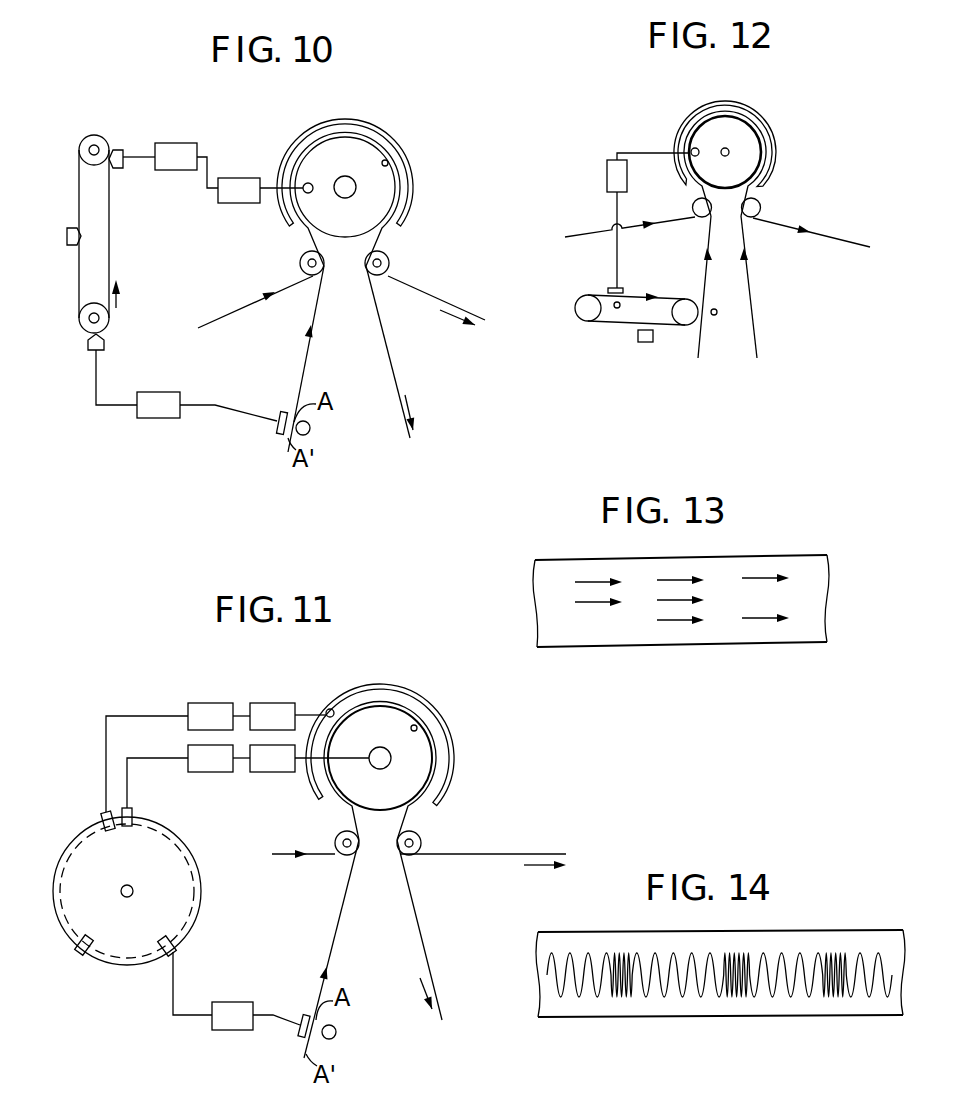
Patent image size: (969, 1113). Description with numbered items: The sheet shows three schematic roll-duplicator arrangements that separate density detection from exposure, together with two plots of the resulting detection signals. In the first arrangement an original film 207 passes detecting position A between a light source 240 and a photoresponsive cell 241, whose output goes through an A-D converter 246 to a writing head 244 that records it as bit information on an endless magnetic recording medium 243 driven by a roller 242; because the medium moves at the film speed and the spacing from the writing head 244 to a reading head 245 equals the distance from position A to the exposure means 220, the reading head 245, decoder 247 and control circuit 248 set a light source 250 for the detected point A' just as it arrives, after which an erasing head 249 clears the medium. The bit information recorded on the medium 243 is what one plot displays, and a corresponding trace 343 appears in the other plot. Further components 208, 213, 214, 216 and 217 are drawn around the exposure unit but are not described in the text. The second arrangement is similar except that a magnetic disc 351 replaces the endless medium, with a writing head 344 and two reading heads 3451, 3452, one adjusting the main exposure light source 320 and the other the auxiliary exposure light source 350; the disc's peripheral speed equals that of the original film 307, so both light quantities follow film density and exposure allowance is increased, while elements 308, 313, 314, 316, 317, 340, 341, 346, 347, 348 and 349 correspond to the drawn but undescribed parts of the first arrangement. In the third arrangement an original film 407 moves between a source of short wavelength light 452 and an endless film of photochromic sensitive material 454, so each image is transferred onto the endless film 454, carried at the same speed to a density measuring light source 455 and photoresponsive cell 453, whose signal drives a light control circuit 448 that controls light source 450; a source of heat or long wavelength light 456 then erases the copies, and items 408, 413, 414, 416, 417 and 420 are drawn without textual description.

In FIG. 10, the original film 207 is at (312, 352).
In FIG. 10, the gas flow 208 is at (268, 298).
In FIG. 10, the nip roller 213 is at (300, 258).
In FIG. 10, the nip roller 214 is at (389, 258).
In FIG. 10, the shield 216 is at (383, 122).
In FIG. 10, the sensor 217 is at (388, 162).
In FIG. 10, the exposure means 220 is at (355, 164).
In FIG. 10, the light source 240 is at (311, 430).
In FIG. 10, the photoresponsive cell 241 is at (276, 431).
In FIG. 10, the roller 242 is at (82, 330).
In FIG. 10, the endless magnetic recording medium 243 is at (110, 222).
In FIG. 13, the endless magnetic recording medium 243 is at (640, 634).
In FIG. 10, the writing head 244 is at (104, 344).
In FIG. 10, the reading head 245 is at (116, 150).
In FIG. 10, the A-D converter 246 is at (161, 392).
In FIG. 10, the decoder 247 is at (173, 143).
In FIG. 10, the control circuit 248 is at (238, 178).
In FIG. 10, the erasing head 249 is at (67, 236).
In FIG. 10, the light source 250 is at (310, 194).
In FIG. 11, the original film 307 is at (335, 928).
In FIG. 11, the gas flow 308 is at (276, 858).
In FIG. 11, the nip roller 313 is at (335, 838).
In FIG. 11, the nip roller 314 is at (420, 838).
In FIG. 11, the shield 316 is at (418, 690).
In FIG. 11, the sensor 317 is at (417, 727).
In FIG. 11, the main exposure light source 320 is at (375, 763).
In FIG. 11, the roller 340 is at (337, 1030).
In FIG. 11, the guide plate 341 is at (299, 1031).
In FIG. 14, the corrugated web 343 is at (713, 1007).
In FIG. 11, the writing head 344 is at (177, 950).
In FIG. 11, the reading head 3451 is at (128, 808).
In FIG. 11, the reading head 3452 is at (102, 814).
In FIG. 11, the control unit 346 is at (240, 1004).
In FIG. 11, the amplifier 347 is at (203, 703).
In FIG. 11, the control unit 348 is at (271, 703).
In FIG. 11, the sensor 349 is at (84, 955).
In FIG. 11, the auxiliary exposure light source 350 is at (330, 709).
In FIG. 11, the magnetic disc 351 is at (60, 925).
In FIG. 12, the original film 407 is at (756, 314).
In FIG. 12, the gas flow 408 is at (837, 241).
In FIG. 12, the nip roller 413 is at (692, 206).
In FIG. 12, the nip roller 414 is at (749, 218).
In FIG. 12, the shield 416 is at (756, 111).
In FIG. 12, the sensor 417 is at (769, 201).
In FIG. 12, the sensor 420 is at (725, 147).
In FIG. 12, the light control circuit 448 is at (607, 175).
In FIG. 12, the light source 450 is at (692, 150).
In FIG. 12, the source of short wavelength light 452 is at (715, 317).
In FIG. 12, the photoresponsive cell 453 is at (618, 288).
In FIG. 12, the endless film of photochromic sensitive material 454 is at (627, 326).
In FIG. 12, the density measuring light source 455 is at (616, 309).
In FIG. 12, the source of heat or long wavelength light 456 is at (648, 330).